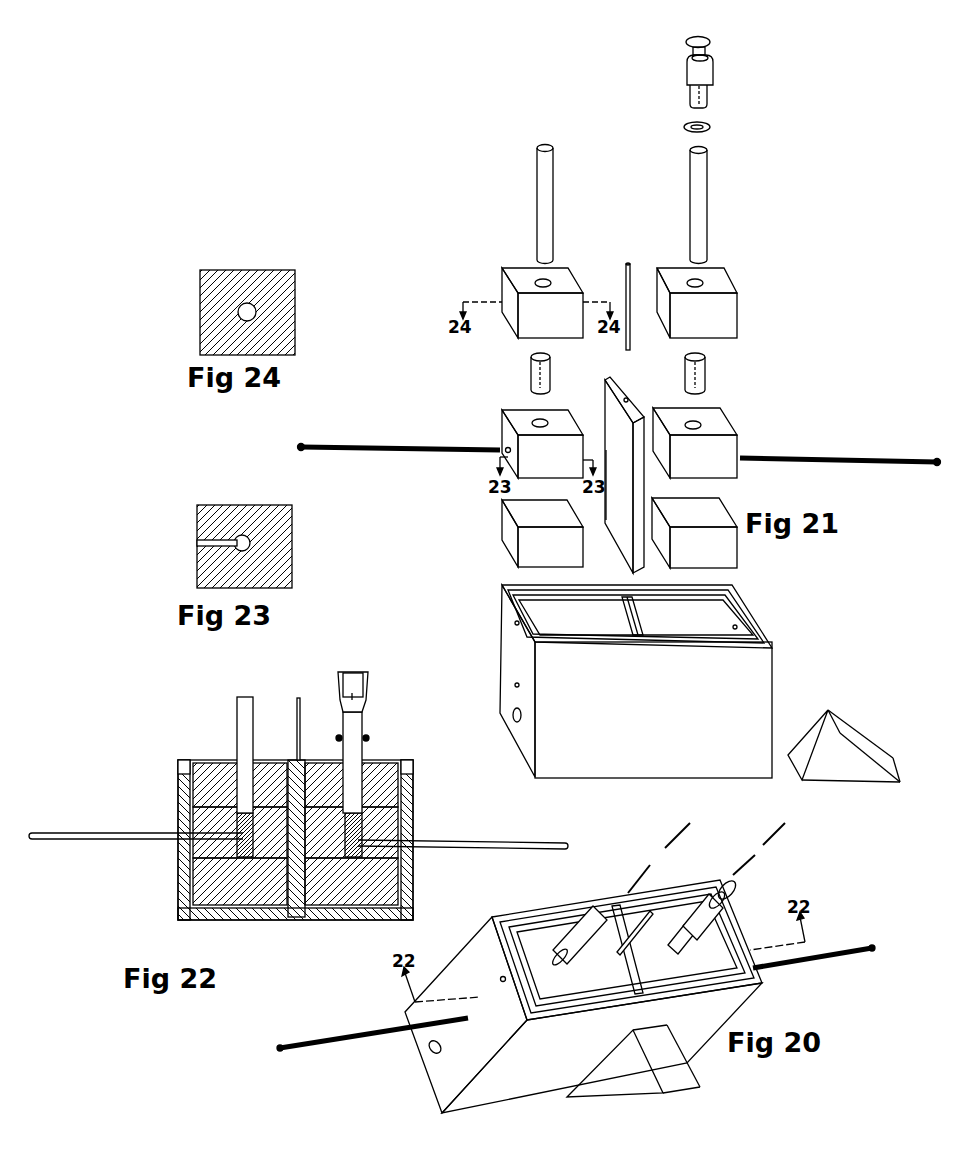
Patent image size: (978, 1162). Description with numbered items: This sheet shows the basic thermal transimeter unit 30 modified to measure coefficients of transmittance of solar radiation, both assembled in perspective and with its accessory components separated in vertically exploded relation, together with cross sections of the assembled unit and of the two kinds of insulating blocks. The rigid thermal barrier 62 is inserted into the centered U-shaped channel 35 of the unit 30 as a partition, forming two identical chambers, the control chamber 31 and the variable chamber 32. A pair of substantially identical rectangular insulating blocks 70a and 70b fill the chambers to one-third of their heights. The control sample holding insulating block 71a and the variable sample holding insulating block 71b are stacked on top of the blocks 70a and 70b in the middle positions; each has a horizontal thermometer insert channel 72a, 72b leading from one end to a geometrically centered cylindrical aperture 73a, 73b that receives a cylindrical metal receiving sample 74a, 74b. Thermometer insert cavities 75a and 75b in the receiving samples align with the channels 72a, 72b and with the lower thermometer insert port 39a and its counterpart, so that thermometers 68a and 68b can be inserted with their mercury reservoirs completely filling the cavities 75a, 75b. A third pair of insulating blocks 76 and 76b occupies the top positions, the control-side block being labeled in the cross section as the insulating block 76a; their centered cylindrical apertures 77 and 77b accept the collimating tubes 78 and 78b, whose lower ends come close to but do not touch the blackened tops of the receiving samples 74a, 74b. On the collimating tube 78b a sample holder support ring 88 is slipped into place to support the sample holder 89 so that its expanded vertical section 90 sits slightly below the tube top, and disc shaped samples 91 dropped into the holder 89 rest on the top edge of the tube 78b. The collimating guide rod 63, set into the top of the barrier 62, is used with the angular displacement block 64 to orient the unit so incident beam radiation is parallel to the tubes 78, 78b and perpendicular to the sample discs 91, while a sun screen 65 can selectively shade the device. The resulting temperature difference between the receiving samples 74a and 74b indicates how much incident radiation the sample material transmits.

In FIG. 21, the basic thermal transimeter unit 30 is at (625, 701).
In FIG. 22, the basic thermal transimeter unit 30 is at (260, 928).
In FIG. 21, the control chamber 31 is at (577, 615).
In FIG. 21, the variable chamber 32 is at (690, 622).
In FIG. 21, the U-shaped channel 35 is at (620, 616).
In FIG. 21, the lower thermometer insert port 39a is at (513, 685).
In FIG. 21, the rigid thermal barrier 62 is at (614, 464).
In FIG. 22, the rigid thermal barrier 62 is at (293, 917).
In FIG. 21, the collimating guide rod 63 is at (623, 258).
In FIG. 22, the collimating guide rod 63 is at (295, 700).
In FIG. 21, the angular displacement block 64 is at (850, 740).
In FIG. 21, the sun screen 65 is at (615, 437).
In FIG. 21, the thermometer 68a is at (413, 447).
In FIG. 22, the thermometer 68a is at (105, 832).
In FIG. 21, the thermometer 68b is at (822, 455).
In FIG. 22, the thermometer 68b is at (462, 838).
In FIG. 21, the solid insulation block 70a is at (533, 545).
In FIG. 22, the solid insulation block 70a is at (230, 878).
In FIG. 21, the solid insulation block 70b is at (708, 547).
In FIG. 22, the solid insulation block 70b is at (358, 883).
In FIG. 21, the control sample holding insulating block 71a is at (505, 442).
In FIG. 23, the control sample holding insulating block 71a is at (233, 529).
In FIG. 22, the control sample holding insulating block 71a is at (217, 847).
In FIG. 21, the variable sample holding insulating block 71b is at (723, 450).
In FIG. 23, the variable sample holding insulating block 71b is at (233, 529).
In FIG. 22, the variable sample holding insulating block 71b is at (383, 848).
In FIG. 21, the thermometer insert channel 72a is at (503, 452).
In FIG. 23, the thermometer insert channel 72a is at (169, 540).
In FIG. 23, the thermometer insert channel 72b is at (197, 540).
In FIG. 21, the cylindrical aperture 73a is at (537, 422).
In FIG. 23, the cylindrical aperture 73a is at (227, 511).
In FIG. 21, the cylindrical aperture 73b is at (700, 424).
In FIG. 23, the cylindrical aperture 73b is at (240, 538).
In FIG. 21, the cylindrical metal receiving sample 74a is at (506, 366).
In FIG. 22, the cylindrical metal receiving sample 74a is at (240, 825).
In FIG. 21, the cylindrical metal receiving sample 74b is at (727, 370).
In FIG. 22, the cylindrical metal receiving sample 74b is at (363, 827).
In FIG. 21, the thermometer insert cavity 75a is at (530, 380).
In FIG. 21, the thermometer insert cavity 75b is at (705, 382).
In FIG. 21, the insulating block 76 is at (522, 288).
In FIG. 24, the insulating block 76 is at (226, 289).
In FIG. 22, the top block 76a is at (218, 780).
In FIG. 21, the insulating block 76b is at (727, 302).
In FIG. 22, the insulating block 76b is at (377, 790).
In FIG. 21, the cylindrical aperture 77 is at (540, 282).
In FIG. 24, the cylindrical aperture 77 is at (245, 307).
In FIG. 21, the cylindrical aperture 77b is at (700, 283).
In FIG. 21, the collimating tube 78 is at (535, 195).
In FIG. 22, the collimating tube 78 is at (237, 707).
In FIG. 21, the collimating tube 78b is at (710, 197).
In FIG. 22, the collimating tube 78b is at (355, 757).
In FIG. 21, the sample holder support ring 88 is at (712, 128).
In FIG. 22, the sample holder support ring 88 is at (372, 738).
In FIG. 21, the sample holder 89 is at (715, 67).
In FIG. 22, the sample holder 89 is at (340, 683).
In FIG. 21, the expanded vertical section 90 is at (707, 88).
In FIG. 22, the expanded vertical section 90 is at (367, 712).
In FIG. 21, the disc shaped sample 91 is at (707, 33).
In FIG. 22, the disc shaped sample 91 is at (352, 693).